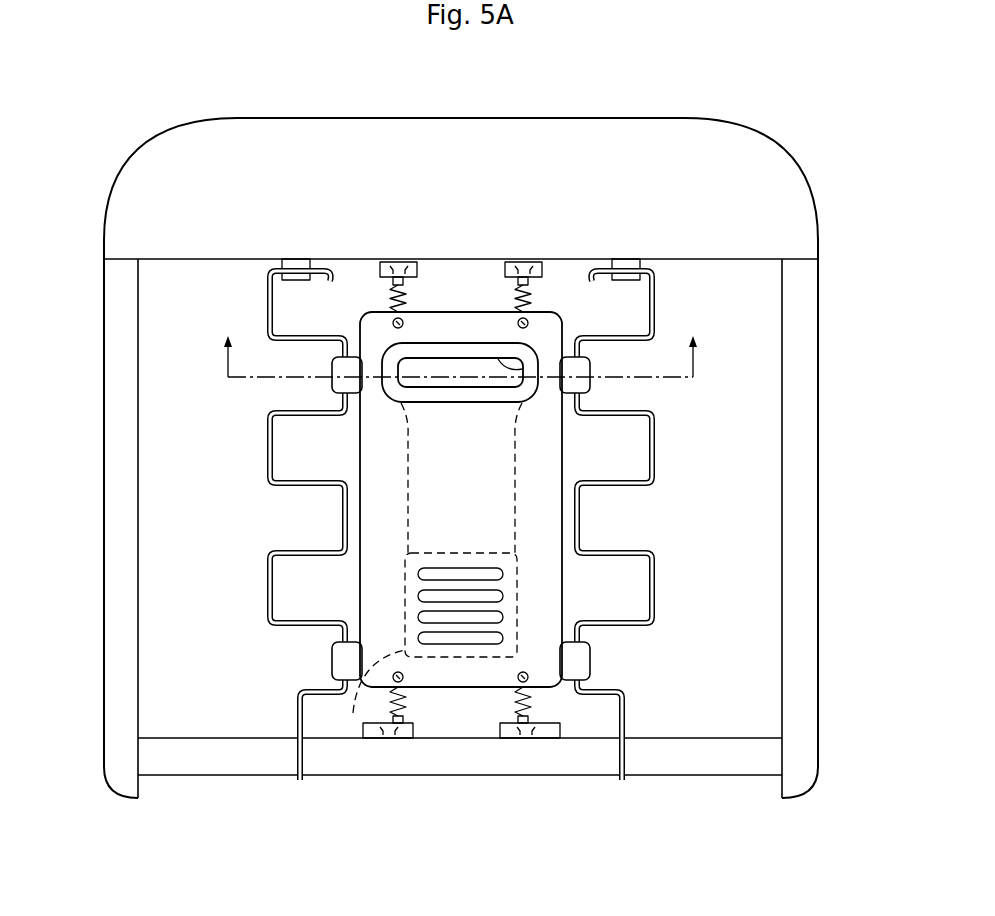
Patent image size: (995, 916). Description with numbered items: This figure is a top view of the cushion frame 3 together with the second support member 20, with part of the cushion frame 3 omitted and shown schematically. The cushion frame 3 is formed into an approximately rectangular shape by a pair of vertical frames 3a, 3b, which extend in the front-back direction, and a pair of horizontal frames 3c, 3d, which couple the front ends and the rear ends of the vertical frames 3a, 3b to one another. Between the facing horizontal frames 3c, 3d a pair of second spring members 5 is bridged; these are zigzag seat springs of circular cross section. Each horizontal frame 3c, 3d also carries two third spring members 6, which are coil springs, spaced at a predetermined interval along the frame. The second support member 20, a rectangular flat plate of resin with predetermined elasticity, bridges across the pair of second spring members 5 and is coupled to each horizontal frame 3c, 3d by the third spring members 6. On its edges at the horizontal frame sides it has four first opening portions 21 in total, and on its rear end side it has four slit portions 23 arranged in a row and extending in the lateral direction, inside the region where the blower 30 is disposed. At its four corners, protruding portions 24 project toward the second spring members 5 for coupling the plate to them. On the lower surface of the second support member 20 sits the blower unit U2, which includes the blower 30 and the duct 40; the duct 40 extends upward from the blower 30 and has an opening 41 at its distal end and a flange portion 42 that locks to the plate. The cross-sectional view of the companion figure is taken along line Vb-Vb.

The cushion frame 3 is at (832, 100).
The vertical frame 3a is at (104, 458).
The vertical frame 3b is at (820, 460).
The horizontal frame 3c is at (461, 130).
The horizontal frame 3d is at (437, 757).
The second spring member 5 is at (268, 445).
The third spring member 6 is at (510, 295).
The second support member 20 is at (670, 614).
The first opening portion 21 is at (396, 326).
The slit portion 23 is at (503, 598).
The protruding portion 24 is at (358, 360).
The blower 30 is at (352, 710).
The duct 40 is at (609, 287).
The opening 41 is at (532, 362).
The flange portion 42 is at (534, 365).
The blower unit U2 is at (530, 478).
The line Vb- Vb is at (460, 344).